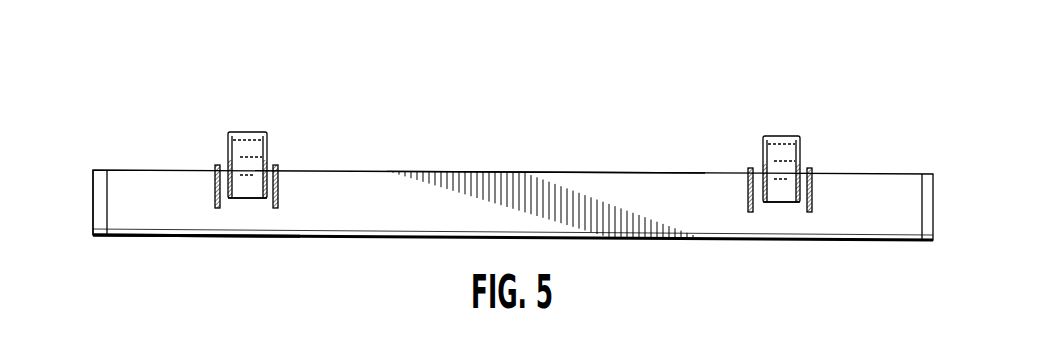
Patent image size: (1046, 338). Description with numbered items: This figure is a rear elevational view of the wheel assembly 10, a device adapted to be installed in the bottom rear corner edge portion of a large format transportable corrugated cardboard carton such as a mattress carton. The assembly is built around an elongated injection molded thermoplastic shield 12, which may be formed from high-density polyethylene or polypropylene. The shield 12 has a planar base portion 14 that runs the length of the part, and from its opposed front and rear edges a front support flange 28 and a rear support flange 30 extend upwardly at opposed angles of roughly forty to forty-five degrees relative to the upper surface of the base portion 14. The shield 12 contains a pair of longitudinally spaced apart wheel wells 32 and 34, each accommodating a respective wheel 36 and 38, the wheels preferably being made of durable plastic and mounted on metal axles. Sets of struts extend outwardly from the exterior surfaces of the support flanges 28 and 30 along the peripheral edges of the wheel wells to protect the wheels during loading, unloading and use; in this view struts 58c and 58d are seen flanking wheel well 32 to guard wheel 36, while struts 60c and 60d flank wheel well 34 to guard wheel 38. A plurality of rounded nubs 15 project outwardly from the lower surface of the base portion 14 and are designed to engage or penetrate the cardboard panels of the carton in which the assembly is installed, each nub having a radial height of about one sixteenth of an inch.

The wheel assembly 10 is at (805, 85).
The shield 12 is at (862, 172).
The base portion 14 is at (411, 172).
The rounded nubs 15 is at (582, 172).
The front support flange 28 is at (95, 197).
The rear support flange 30 is at (125, 222).
The wheel well 32 is at (238, 198).
The wheel well 34 is at (781, 202).
The wheel 36 is at (250, 133).
The wheel 38 is at (780, 137).
The strut 58c is at (278, 203).
The strut 58d is at (215, 201).
The strut 60c is at (812, 206).
The strut 60d is at (750, 206).